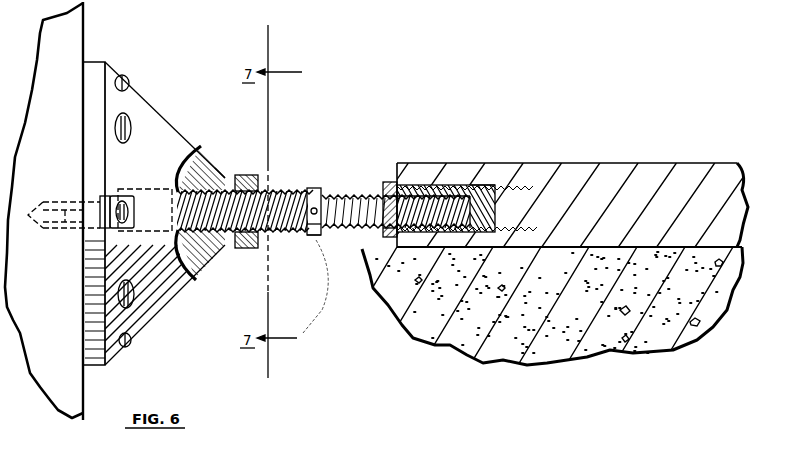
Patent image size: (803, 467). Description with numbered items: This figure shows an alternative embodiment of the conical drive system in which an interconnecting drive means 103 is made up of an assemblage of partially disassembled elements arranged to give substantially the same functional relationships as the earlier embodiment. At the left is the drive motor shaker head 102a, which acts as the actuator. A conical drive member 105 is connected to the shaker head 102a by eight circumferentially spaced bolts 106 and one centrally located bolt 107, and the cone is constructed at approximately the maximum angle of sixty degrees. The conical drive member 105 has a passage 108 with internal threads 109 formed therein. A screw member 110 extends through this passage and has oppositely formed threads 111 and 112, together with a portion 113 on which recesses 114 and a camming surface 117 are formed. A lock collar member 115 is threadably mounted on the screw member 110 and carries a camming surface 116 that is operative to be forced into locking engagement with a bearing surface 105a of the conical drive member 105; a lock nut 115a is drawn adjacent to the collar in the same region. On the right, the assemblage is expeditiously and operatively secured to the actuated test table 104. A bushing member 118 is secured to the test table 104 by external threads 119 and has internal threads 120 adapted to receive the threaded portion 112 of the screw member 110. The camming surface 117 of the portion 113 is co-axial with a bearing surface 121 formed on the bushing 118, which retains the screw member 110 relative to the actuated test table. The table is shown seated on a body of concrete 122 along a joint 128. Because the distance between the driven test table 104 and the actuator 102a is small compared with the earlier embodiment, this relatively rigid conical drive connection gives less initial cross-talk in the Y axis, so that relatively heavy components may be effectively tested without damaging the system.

The drive motor shaker head 102a is at (77, 33).
The interconnecting drive means 103 is at (278, 147).
The actuated test table 104 is at (613, 200).
The conical drive member 105 is at (153, 133).
The bearing surface 105a is at (223, 187).
The circumferentially spaced bolts 106 is at (118, 118).
The centrally located bolt 107 is at (70, 230).
The passage 108 is at (145, 190).
The internal threads 109 is at (136, 210).
The screw member 110 is at (325, 286).
The threads 111 is at (276, 233).
The threads 112 is at (353, 196).
The portion 113 is at (313, 189).
The recesses 114 is at (331, 224).
The lock collar member 115 is at (257, 189).
The lock nut 115a is at (241, 251).
The camming surface 116 is at (216, 272).
The camming surface 117 is at (318, 204).
The bushing member 118 is at (480, 208).
The external threads 119 is at (482, 183).
The internal threads 120 is at (420, 183).
The bearing surface 121 is at (383, 182).
The concrete 122 is at (578, 316).
The joint 128 is at (664, 247).